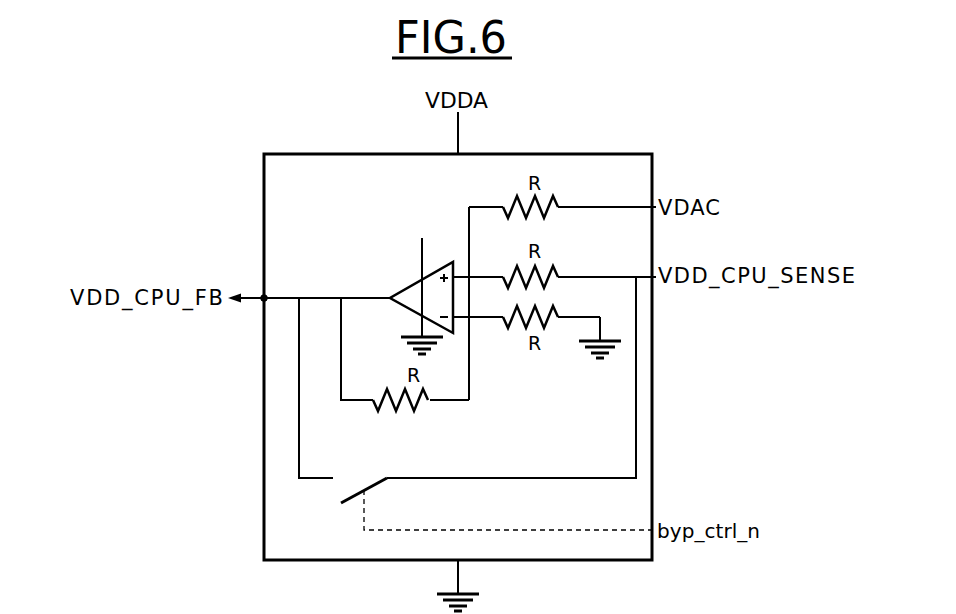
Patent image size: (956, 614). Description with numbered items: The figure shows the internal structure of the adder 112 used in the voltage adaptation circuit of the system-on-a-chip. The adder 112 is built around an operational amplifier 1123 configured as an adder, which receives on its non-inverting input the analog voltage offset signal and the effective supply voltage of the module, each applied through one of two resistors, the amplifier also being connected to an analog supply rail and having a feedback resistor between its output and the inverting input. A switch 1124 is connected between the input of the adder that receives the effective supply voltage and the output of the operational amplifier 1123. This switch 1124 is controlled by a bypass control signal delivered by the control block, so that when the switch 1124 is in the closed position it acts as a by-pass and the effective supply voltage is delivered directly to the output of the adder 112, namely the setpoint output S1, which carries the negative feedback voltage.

The adder 112 is at (528, 154).
The operational amplifier 1123 is at (413, 289).
The switch 1124 is at (370, 482).
The setpoint output S1 is at (264, 297).